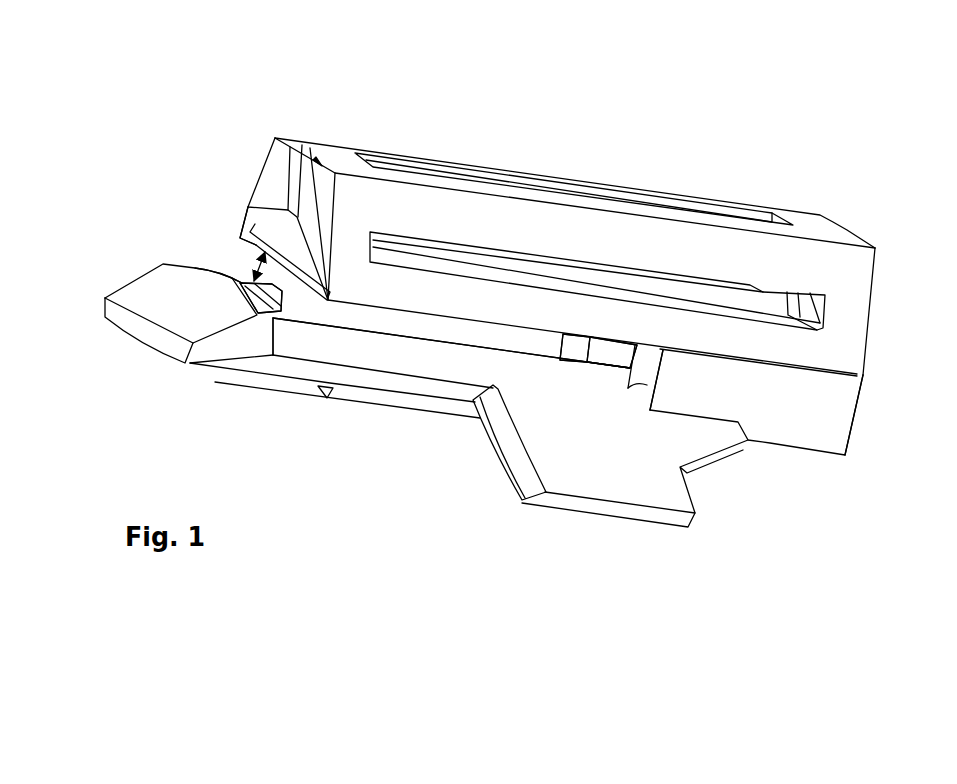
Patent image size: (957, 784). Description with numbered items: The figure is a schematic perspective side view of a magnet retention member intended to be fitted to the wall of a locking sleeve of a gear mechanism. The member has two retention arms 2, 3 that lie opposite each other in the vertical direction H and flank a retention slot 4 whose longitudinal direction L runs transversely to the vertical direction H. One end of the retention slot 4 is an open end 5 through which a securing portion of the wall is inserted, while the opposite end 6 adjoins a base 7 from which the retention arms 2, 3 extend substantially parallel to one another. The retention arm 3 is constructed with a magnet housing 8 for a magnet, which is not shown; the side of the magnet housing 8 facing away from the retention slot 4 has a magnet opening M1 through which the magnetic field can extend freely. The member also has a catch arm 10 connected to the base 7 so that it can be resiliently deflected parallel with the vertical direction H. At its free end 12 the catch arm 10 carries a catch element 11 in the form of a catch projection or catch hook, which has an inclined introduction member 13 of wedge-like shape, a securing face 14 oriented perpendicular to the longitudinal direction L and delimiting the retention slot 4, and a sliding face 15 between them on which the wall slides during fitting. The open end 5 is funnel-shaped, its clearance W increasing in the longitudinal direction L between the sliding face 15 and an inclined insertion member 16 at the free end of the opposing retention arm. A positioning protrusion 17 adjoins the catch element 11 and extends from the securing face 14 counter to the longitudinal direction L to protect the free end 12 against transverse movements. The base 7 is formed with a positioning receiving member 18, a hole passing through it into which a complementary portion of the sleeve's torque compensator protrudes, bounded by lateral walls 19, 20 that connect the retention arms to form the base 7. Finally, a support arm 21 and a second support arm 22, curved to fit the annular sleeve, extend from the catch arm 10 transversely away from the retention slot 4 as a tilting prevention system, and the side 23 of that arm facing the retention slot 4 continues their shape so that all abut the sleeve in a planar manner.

The retention arm 2 is at (255, 398).
The catch arm 10 is at (526, 422).
The retention arm 3 is at (378, 142).
The magnet housing 8 is at (557, 244).
The retention slot 4 is at (385, 339).
The open end 5 is at (203, 260).
The end 6 is at (606, 372).
The base 7 is at (852, 433).
The catch element 11 is at (185, 315).
The free end 12 is at (193, 336).
The inclined introduction member 13 is at (192, 304).
The securing face 14 is at (277, 337).
The sliding face 15 is at (240, 285).
The inclined insertion member 16 is at (239, 235).
The positioning protrusion 17 is at (280, 300).
The positioning receiving member 18 is at (573, 345).
The lateral wall 19 is at (608, 346).
The lateral wall 20 is at (628, 388).
The support arm 21 is at (520, 500).
The second support arm 22 is at (345, 390).
The side 23 is at (427, 353).
The vertical direction H is at (132, 103).
The longitudinal direction L is at (132, 103).
The clearance W is at (240, 255).
The magnet opening M1 is at (557, 244).